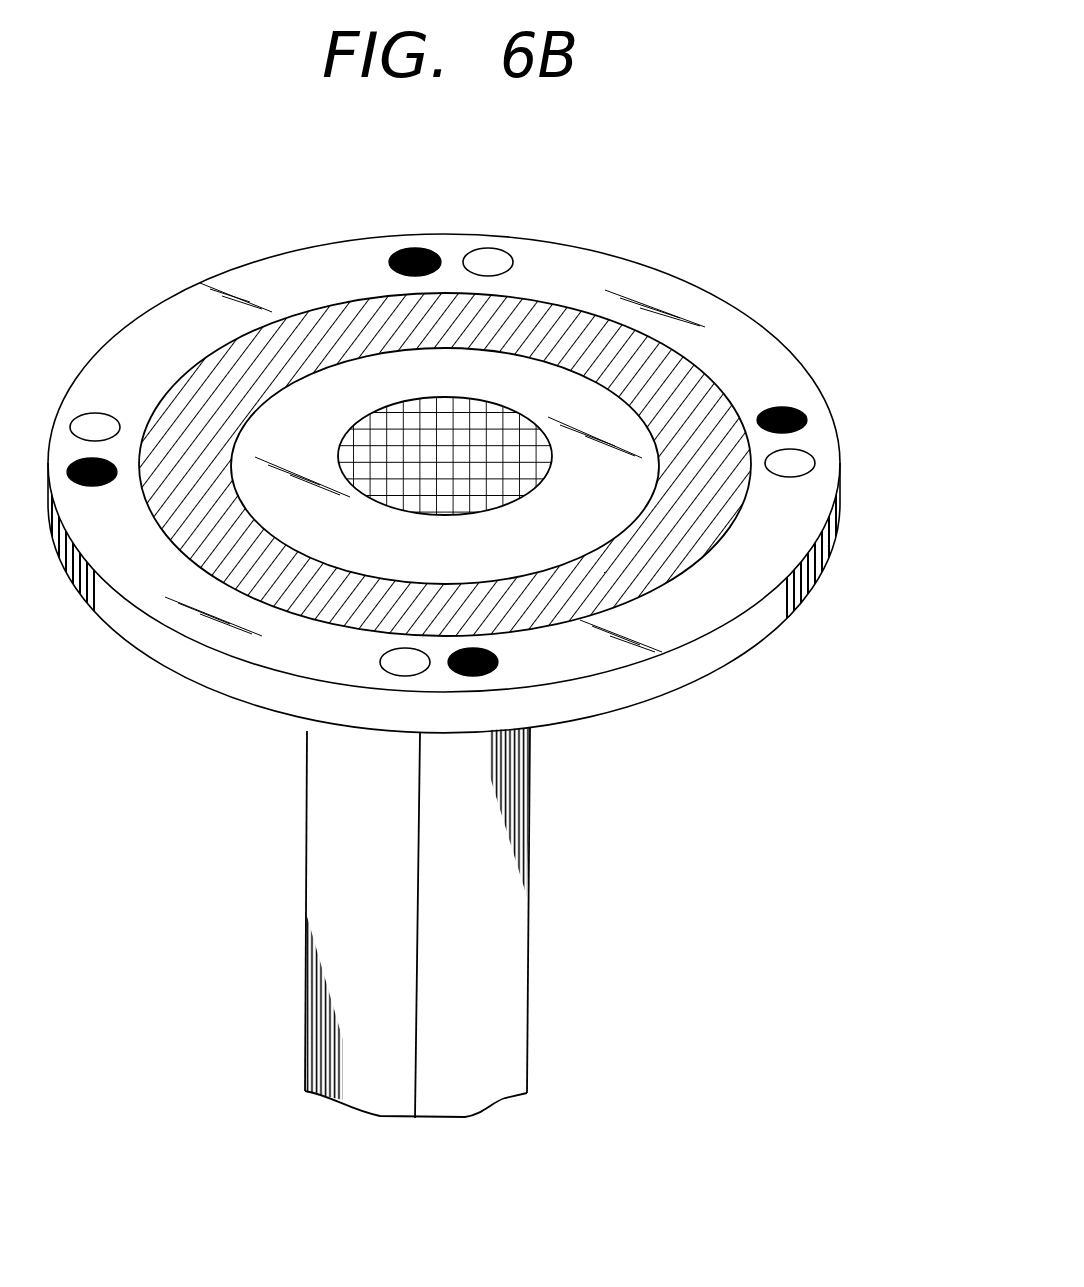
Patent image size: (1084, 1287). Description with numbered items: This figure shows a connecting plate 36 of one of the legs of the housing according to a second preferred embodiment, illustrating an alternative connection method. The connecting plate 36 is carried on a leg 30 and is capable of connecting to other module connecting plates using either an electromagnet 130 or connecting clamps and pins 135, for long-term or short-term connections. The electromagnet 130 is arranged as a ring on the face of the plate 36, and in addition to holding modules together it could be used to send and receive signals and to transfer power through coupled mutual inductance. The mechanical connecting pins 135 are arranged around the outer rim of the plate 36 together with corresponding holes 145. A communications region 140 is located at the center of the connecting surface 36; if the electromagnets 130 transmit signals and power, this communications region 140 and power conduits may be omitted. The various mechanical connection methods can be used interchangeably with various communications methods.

The shaft 30 is at (527, 950).
The connecting plate 36 is at (835, 428).
The electromagnet 130 is at (193, 362).
The connecting pins 135 is at (410, 250).
The communications region 140 is at (528, 498).
The open mounting hole 145 is at (497, 252).